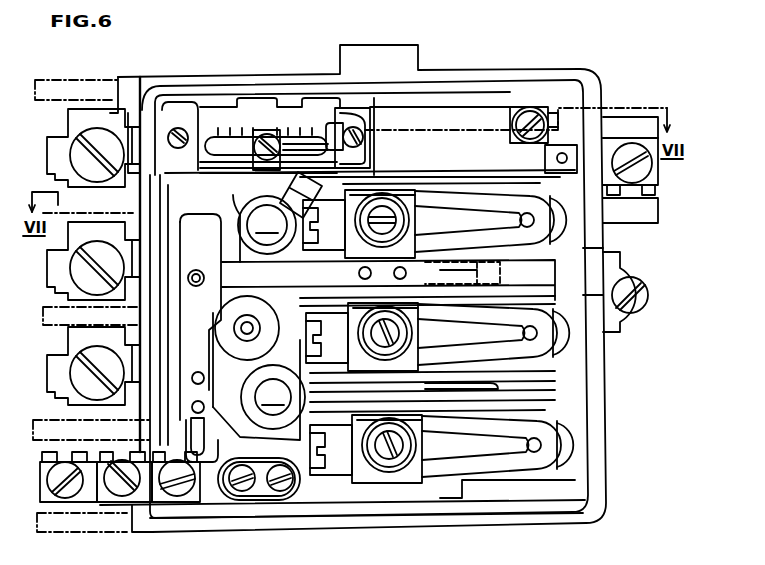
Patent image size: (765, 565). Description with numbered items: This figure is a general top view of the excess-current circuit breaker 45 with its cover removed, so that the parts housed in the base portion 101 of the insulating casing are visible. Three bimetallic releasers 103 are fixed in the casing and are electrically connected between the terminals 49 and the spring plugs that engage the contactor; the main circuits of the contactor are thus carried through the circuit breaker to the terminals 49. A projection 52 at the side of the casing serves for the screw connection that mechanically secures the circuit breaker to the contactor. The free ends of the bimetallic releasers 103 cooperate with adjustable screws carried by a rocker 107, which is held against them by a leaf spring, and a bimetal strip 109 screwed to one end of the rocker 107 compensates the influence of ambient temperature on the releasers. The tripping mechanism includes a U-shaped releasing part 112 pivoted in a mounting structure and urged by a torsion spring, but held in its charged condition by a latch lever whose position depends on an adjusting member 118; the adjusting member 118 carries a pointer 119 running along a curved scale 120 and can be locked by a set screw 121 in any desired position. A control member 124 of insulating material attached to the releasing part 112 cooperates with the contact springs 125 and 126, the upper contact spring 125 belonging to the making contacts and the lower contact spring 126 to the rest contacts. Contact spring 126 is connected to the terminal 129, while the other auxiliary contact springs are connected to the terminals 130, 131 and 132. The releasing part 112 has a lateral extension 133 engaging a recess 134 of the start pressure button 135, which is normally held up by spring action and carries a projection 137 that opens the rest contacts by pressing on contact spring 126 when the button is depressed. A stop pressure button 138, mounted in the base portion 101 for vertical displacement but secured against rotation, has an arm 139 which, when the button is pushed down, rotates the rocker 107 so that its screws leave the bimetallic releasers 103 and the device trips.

The excess-current circuit breaker 45 is at (607, 521).
The terminals 49 is at (77, 158).
The projection 52 is at (647, 313).
The base portion 101 is at (600, 458).
The bimetallic releasers 103 is at (540, 222).
The rocker 107 is at (520, 185).
The bimetal strip 109 is at (482, 113).
The releasing part 112 is at (188, 213).
The adjusting member 118 is at (315, 163).
The pointer 119 is at (298, 142).
The curved scale 120 is at (233, 115).
The set screw 121 is at (263, 132).
The control member 124 is at (230, 235).
The contact spring 125 is at (200, 366).
The contact spring 126 is at (263, 283).
The terminal 129 is at (658, 190).
The terminal 130 is at (92, 490).
The terminal 131 is at (145, 487).
The terminal 132 is at (212, 487).
The lateral extension 133 is at (267, 225).
The recess 134 is at (327, 248).
The start pressure button 135 is at (268, 240).
The projection 137 is at (233, 230).
The stop pressure button 138 is at (273, 397).
The arm 139 is at (497, 387).